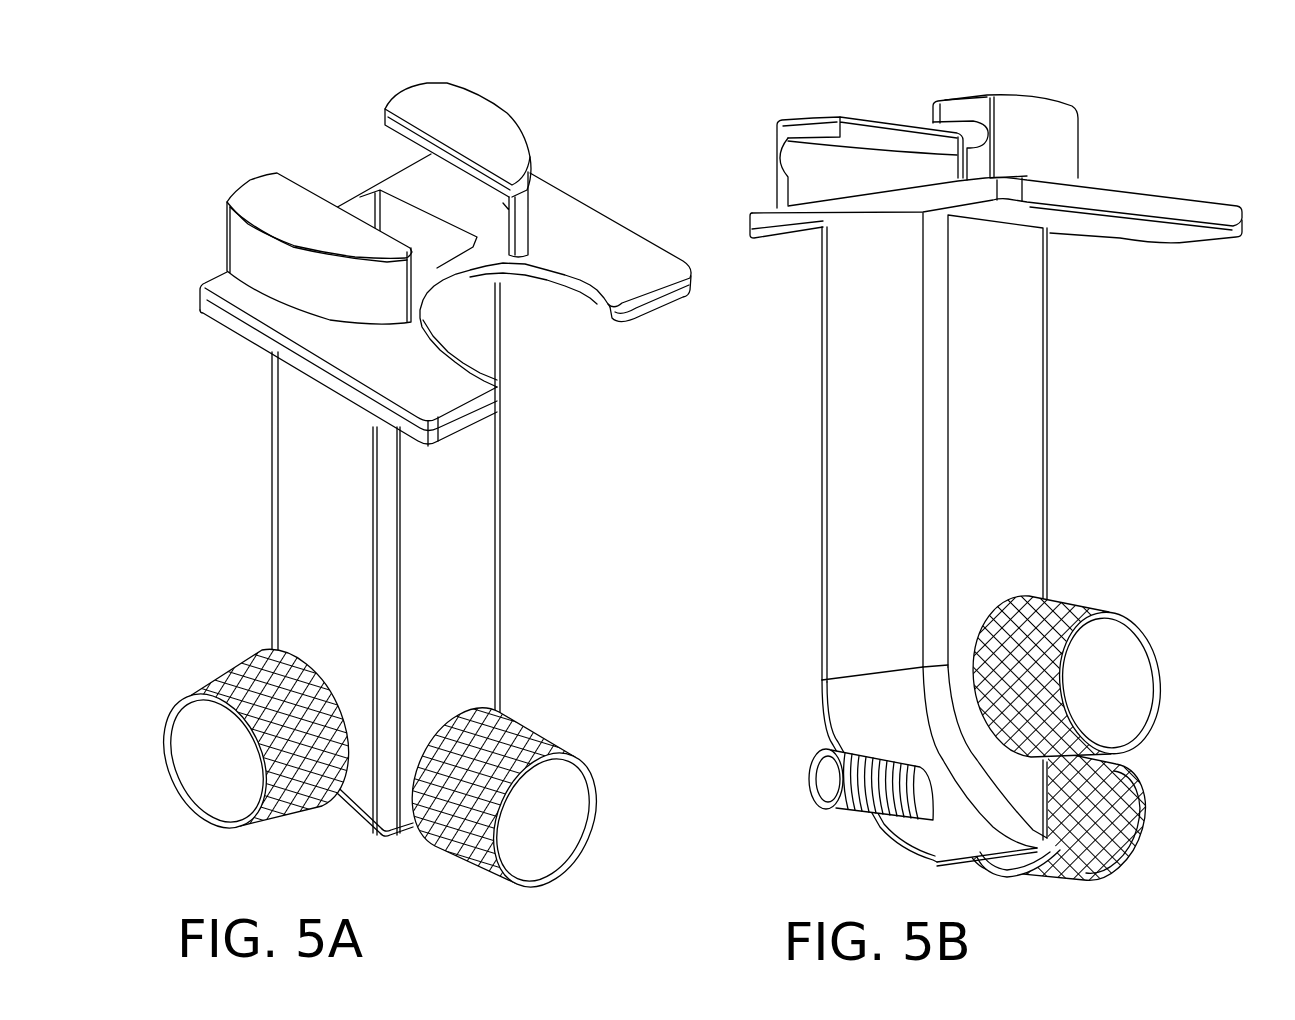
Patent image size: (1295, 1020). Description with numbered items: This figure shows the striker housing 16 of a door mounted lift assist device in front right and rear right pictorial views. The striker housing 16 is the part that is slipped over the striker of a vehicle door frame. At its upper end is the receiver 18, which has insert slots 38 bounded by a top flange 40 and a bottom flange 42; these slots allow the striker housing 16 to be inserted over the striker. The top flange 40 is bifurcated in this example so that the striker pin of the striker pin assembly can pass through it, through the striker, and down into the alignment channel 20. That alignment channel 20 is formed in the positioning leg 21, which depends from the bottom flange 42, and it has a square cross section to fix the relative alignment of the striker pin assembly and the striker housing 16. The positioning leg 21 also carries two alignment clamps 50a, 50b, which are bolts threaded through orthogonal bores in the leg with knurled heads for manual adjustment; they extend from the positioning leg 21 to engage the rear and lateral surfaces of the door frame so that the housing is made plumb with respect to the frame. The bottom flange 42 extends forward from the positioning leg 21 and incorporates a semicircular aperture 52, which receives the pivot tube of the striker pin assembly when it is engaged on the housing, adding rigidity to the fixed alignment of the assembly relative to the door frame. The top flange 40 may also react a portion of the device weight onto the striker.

In FIG. 5A, the striker housing 16 is at (222, 514).
In FIG. 5B, the striker housing 16 is at (775, 478).
In FIG. 5A, the receiver 18 is at (243, 188).
In FIG. 5B, the receiver 18 is at (1025, 98).
In FIG. 5A, the alignment channel 20 is at (436, 197).
In FIG. 5B, the alignment channel 20 is at (996, 210).
In FIG. 5A, the positioning leg 21 is at (322, 563).
In FIG. 5B, the positioning leg 21 is at (880, 512).
In FIG. 5B, the insert slots 38 is at (833, 168).
In FIG. 5A, the top flange 40 is at (468, 129).
In FIG. 5B, the top flange 40 is at (848, 120).
In FIG. 5A, the bottom flange 42 is at (407, 223).
In FIG. 5B, the bottom flange 42 is at (888, 167).
In FIG. 5A, the alignment clamp 50a is at (211, 773).
In FIG. 5B, the alignment clamp 50a is at (1118, 663).
In FIG. 5A, the alignment clamp 50b is at (549, 833).
In FIG. 5B, the alignment clamp 50b is at (1113, 847).
In FIG. 5A, the semicircular aperture 52 is at (523, 322).